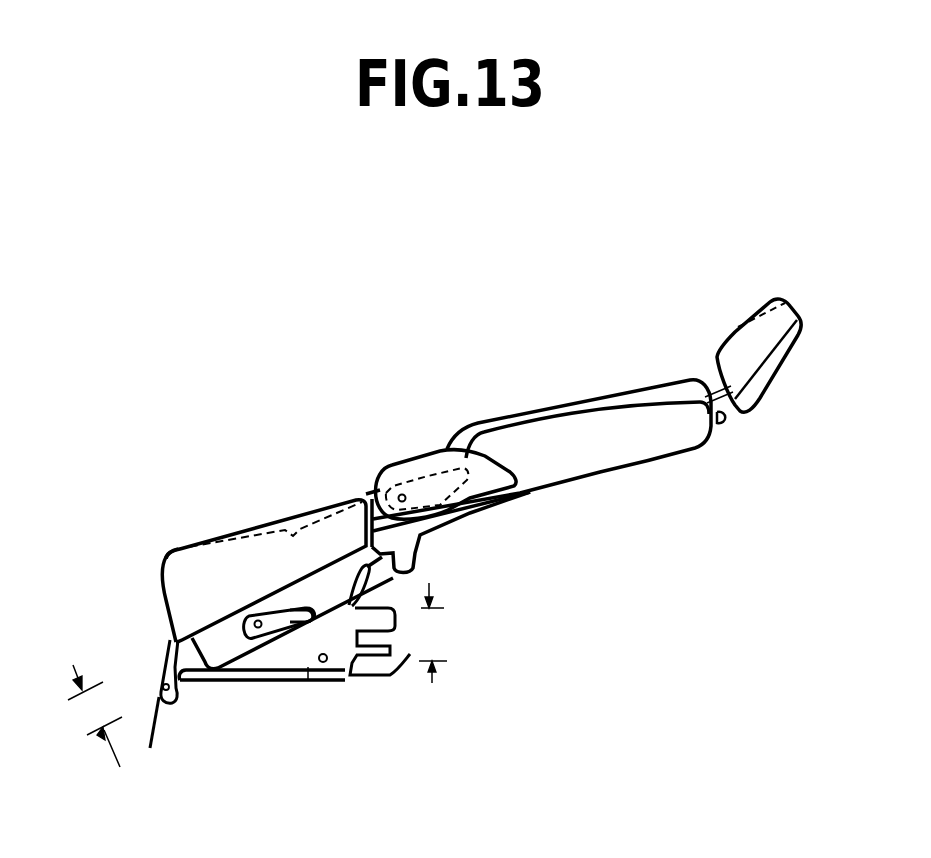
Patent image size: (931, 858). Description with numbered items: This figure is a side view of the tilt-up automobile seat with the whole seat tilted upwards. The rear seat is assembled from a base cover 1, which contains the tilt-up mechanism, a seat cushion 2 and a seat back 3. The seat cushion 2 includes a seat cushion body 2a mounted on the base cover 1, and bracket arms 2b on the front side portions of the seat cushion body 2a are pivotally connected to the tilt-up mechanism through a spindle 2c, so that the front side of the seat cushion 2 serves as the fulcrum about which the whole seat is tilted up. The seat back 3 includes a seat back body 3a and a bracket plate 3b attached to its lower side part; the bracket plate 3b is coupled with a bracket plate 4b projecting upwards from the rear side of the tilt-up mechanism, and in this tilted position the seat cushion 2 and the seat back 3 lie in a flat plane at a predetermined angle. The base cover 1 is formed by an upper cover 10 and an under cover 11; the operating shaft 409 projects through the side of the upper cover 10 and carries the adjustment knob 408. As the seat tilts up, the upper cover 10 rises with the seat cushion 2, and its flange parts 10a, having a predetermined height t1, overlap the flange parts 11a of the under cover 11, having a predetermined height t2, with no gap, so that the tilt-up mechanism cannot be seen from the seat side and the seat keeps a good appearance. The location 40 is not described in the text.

The base cover 1 is at (286, 655).
The seat cushion 2 is at (317, 501).
The seat cushion body 2a is at (169, 550).
The bracket arms 2b is at (170, 647).
The spindle 2c is at (155, 738).
The seat back 3 is at (580, 399).
The seat back body 3a is at (512, 420).
The bracket plate 3b is at (438, 468).
The bracket plate 4b is at (378, 474).
The pad fastening point 40 is at (403, 490).
The upper cover 10 is at (419, 549).
The flange parts 10a is at (300, 594).
The under cover 11 is at (341, 666).
The flange parts 11a is at (308, 656).
The adjustment knob 408 is at (243, 628).
The operating shaft 409 is at (256, 621).
The height of upper cover flange parts t1 is at (99, 727).
The height of under cover flange parts t2 is at (441, 633).